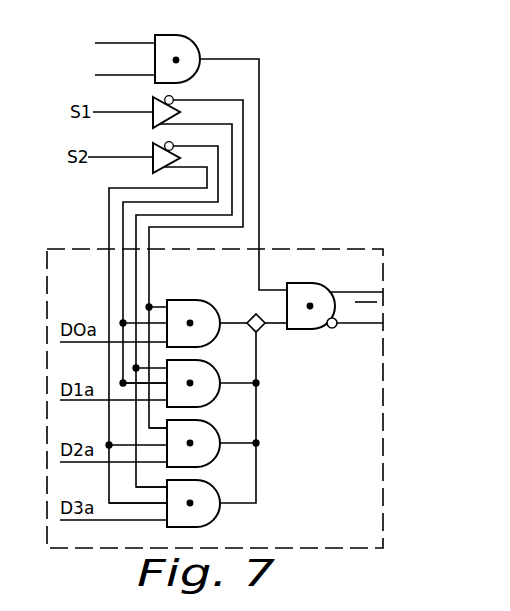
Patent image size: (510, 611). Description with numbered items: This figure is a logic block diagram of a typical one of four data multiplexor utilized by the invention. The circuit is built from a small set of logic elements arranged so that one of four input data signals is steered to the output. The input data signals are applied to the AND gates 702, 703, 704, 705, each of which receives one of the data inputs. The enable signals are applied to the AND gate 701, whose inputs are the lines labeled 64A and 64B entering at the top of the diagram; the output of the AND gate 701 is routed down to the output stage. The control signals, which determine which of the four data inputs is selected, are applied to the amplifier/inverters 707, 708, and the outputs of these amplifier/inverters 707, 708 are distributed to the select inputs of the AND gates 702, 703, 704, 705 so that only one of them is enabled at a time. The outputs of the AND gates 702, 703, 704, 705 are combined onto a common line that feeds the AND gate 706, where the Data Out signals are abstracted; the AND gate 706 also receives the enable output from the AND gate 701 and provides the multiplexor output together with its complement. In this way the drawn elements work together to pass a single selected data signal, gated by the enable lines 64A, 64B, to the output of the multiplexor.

The AND gate 701 is at (168, 46).
The AND gate 702 is at (187, 308).
The AND gate 703 is at (205, 369).
The AND gate 704 is at (204, 431).
The AND gate 705 is at (203, 493).
The AND gate 706 is at (310, 291).
The amplifier/inverter 707 is at (177, 102).
The amplifier/inverter 708 is at (152, 150).
The input signal line 64A is at (106, 43).
The input signal line 64B is at (106, 75).